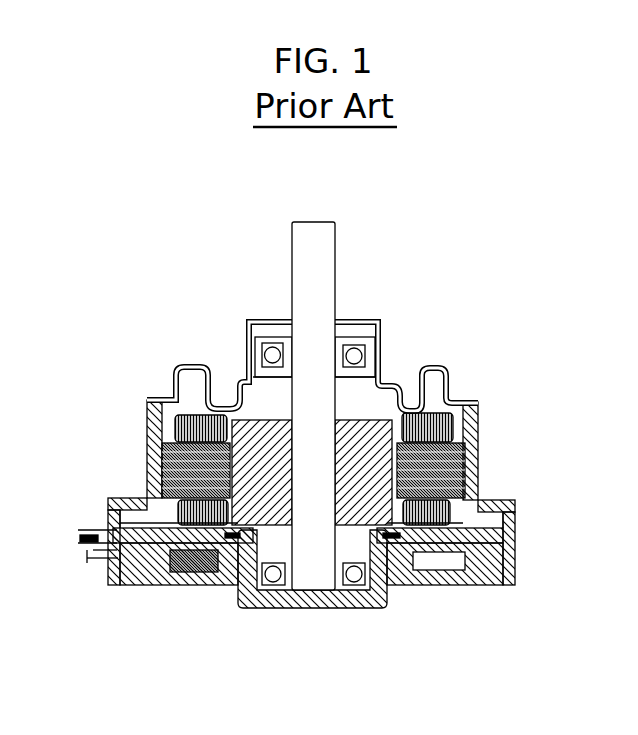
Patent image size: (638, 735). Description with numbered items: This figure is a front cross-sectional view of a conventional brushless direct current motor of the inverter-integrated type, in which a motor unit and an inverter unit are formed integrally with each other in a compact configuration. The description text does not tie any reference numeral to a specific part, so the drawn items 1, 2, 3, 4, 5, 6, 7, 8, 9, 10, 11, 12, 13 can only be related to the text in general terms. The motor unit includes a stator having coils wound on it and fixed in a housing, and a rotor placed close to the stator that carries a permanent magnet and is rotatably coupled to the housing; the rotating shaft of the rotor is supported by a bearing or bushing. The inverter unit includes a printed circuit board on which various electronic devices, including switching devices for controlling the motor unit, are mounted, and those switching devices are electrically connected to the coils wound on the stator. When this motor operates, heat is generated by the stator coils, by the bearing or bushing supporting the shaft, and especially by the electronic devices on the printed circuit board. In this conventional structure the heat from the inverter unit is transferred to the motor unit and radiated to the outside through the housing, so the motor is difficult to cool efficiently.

The stator 1 is at (173, 437).
The housing 2 is at (447, 408).
The rotor 3 is at (319, 394).
The rotor core 4 is at (363, 445).
The shaft 5 is at (315, 272).
The bearing 6 is at (357, 330).
The upper bracket 7 is at (268, 324).
The base flange 8 is at (112, 580).
The recess 9 is at (437, 562).
The lower bracket 10 is at (255, 606).
The circuit board 11 is at (160, 548).
The electronic component 12 is at (177, 566).
The connector 13 is at (95, 533).